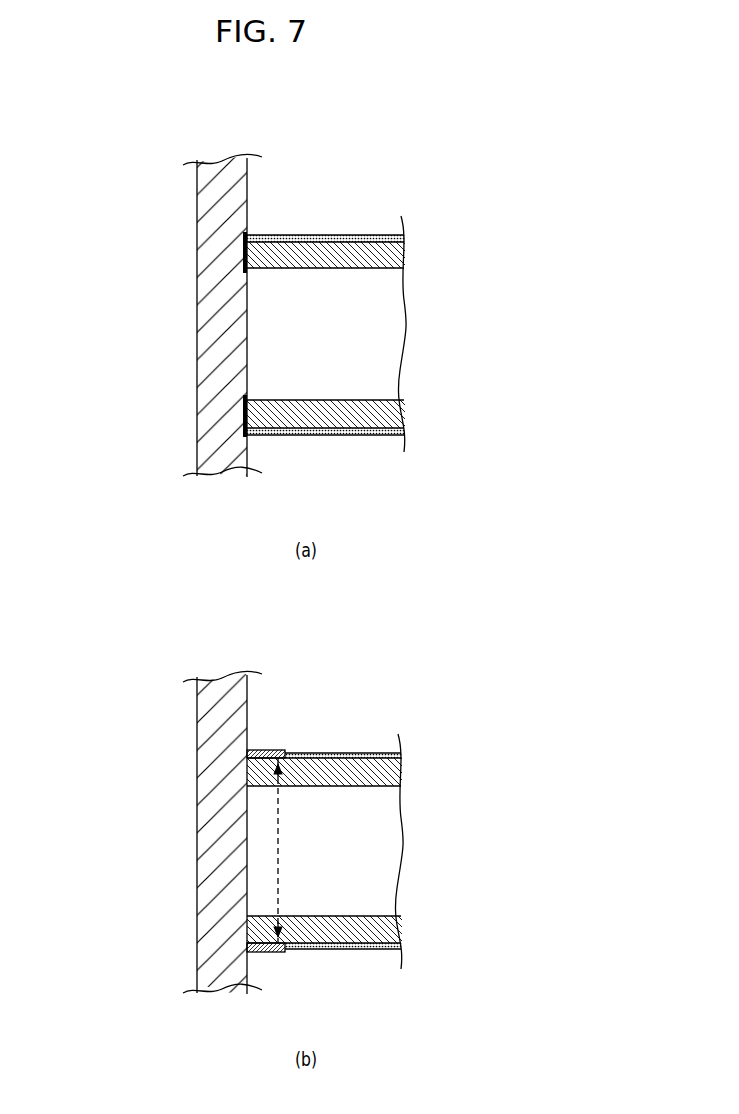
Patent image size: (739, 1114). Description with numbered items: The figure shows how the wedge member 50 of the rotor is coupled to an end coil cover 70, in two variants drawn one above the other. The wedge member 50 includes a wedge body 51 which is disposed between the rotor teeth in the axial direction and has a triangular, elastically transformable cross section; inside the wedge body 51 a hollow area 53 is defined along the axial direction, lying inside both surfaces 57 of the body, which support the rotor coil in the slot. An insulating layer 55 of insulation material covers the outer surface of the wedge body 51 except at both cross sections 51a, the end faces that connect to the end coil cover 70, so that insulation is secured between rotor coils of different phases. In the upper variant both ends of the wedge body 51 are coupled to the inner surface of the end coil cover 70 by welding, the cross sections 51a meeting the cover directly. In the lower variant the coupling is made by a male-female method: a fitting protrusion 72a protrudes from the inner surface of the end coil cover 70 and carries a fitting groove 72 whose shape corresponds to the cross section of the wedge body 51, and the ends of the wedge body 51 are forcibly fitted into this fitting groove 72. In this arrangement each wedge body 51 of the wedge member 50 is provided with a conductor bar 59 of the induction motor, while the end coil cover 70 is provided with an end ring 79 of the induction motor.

The wedge member 50 is at (397, 203).
The wedge body 51 is at (324, 250).
The cross sections 51a is at (239, 258).
The hollow area 53 is at (324, 350).
The insulating layer 55 is at (372, 238).
The surfaces 57 is at (349, 232).
The conductor bar 59 is at (371, 274).
The end coil cover 70 is at (197, 313).
The fitting groove 72 is at (278, 808).
The fitting protrusion 72a is at (250, 750).
The end ring 79 is at (192, 376).